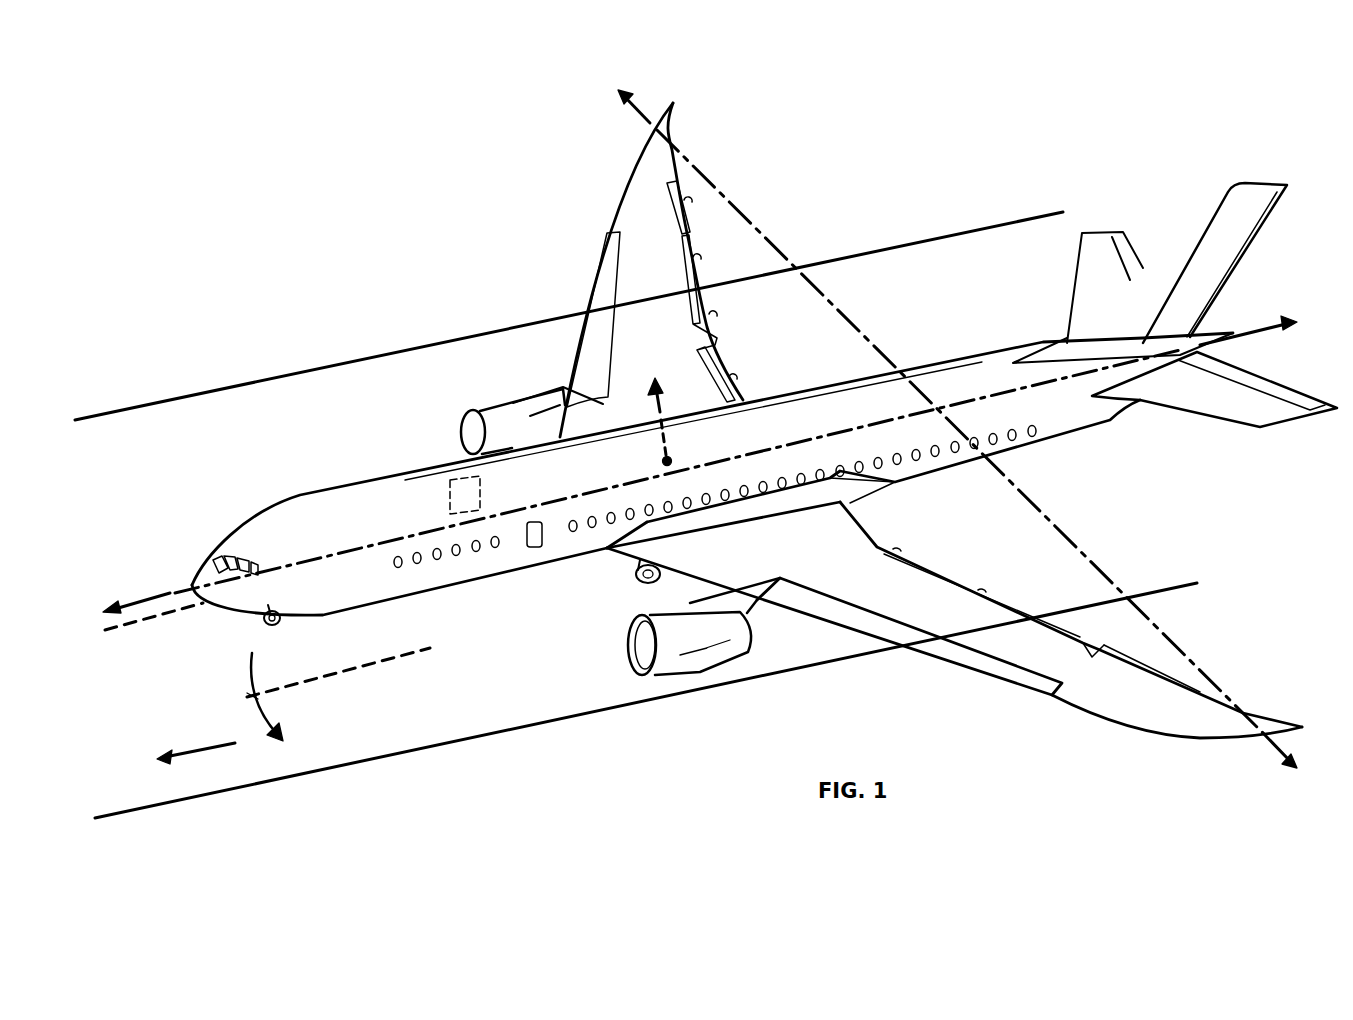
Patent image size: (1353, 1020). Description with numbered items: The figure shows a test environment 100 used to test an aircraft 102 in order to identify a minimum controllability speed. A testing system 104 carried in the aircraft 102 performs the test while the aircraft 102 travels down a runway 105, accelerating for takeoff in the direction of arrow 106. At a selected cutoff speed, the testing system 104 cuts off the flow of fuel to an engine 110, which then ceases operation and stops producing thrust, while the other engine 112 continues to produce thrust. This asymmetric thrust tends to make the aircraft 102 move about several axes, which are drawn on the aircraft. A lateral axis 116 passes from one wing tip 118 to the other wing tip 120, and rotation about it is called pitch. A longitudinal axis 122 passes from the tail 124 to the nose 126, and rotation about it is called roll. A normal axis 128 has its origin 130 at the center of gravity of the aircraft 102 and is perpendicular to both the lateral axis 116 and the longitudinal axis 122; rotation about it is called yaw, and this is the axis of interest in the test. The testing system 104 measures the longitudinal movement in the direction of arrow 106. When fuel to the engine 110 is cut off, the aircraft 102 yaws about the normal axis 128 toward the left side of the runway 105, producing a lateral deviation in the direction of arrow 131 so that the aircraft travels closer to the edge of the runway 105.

The test environment 100 is at (321, 142).
The aircraft 102 is at (343, 485).
The testing system 104 is at (482, 478).
The runway 105 is at (165, 400).
The arrow 106 is at (200, 747).
The engine 110 is at (707, 675).
The engine 112 is at (500, 403).
The lateral axis 116 is at (730, 198).
The wing tip 118 is at (1302, 727).
The wing tip 120 is at (673, 103).
The longitudinal axis 122 is at (165, 595).
The tail 124 is at (1233, 336).
The nose 126 is at (213, 562).
The normal axis 128 is at (665, 432).
The origin 130 is at (660, 460).
The arrow 131 is at (247, 668).